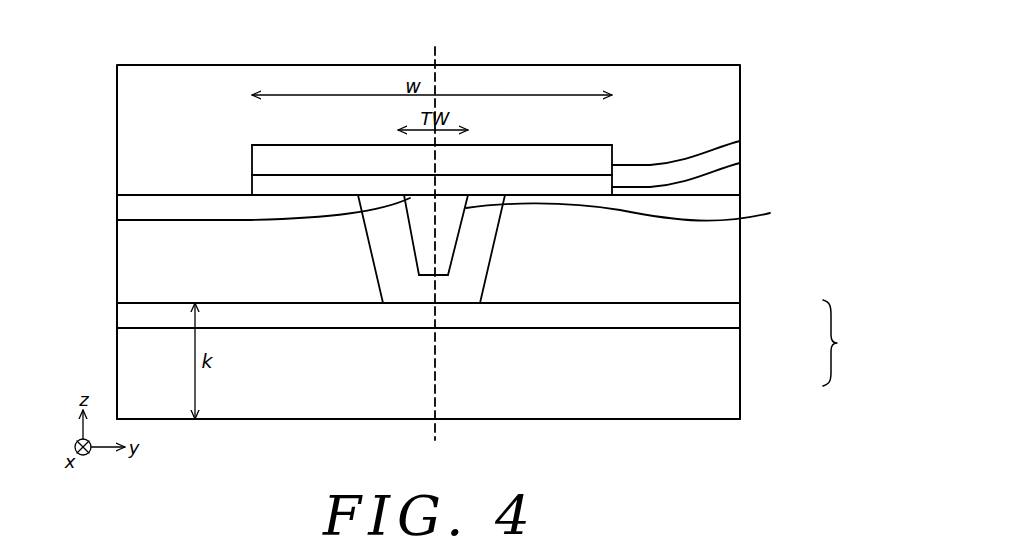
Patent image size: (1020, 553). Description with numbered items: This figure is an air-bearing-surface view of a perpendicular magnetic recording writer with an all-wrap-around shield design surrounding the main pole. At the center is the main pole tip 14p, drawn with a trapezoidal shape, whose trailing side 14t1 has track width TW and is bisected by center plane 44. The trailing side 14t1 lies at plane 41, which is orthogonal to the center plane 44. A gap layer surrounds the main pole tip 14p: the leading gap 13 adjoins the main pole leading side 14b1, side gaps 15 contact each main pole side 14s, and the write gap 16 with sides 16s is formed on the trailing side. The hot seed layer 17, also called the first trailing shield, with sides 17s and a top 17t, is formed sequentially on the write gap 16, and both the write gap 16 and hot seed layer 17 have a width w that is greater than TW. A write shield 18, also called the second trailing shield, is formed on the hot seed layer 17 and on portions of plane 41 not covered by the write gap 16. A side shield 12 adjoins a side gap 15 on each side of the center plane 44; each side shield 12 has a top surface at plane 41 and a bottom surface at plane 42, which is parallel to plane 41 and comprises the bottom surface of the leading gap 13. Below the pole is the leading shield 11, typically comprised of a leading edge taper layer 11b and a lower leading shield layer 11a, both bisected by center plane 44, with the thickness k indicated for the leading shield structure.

The leading shield 11 is at (846, 343).
The lower leading shield layer 11a is at (728, 346).
The leading edge taper layer 11b is at (728, 316).
The side shield 12 is at (136, 244).
The leading gap 13 is at (421, 292).
The main pole leading side 14b1 is at (430, 275).
The main pole tip 14p is at (442, 262).
The main pole side 14s is at (641, 214).
The main pole trailing side 14t1 is at (117, 220).
The side gap 15 is at (393, 256).
The write gap 16 is at (268, 187).
The write gap side 16s is at (740, 163).
The hot seed layer 17 is at (266, 163).
The hot seed layer side 17s is at (740, 141).
The upper shield top surface 17t is at (522, 145).
The write shield 18 is at (722, 98).
The plane 41- 41 is at (117, 195).
The plane 42- 42 is at (117, 303).
The center plane 44 is at (436, 249).